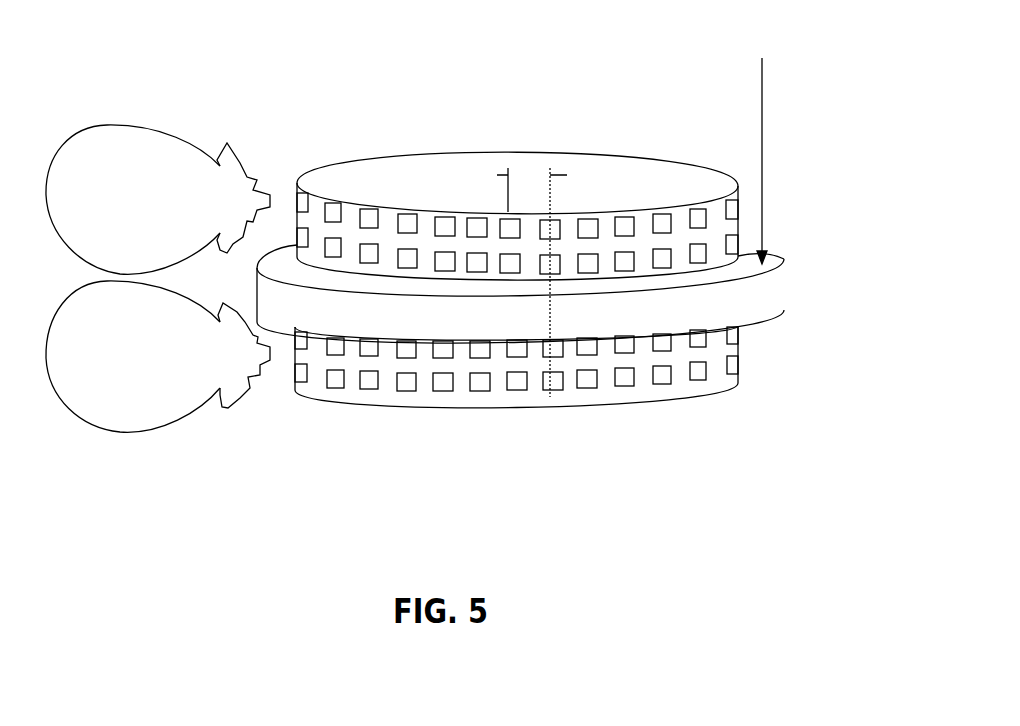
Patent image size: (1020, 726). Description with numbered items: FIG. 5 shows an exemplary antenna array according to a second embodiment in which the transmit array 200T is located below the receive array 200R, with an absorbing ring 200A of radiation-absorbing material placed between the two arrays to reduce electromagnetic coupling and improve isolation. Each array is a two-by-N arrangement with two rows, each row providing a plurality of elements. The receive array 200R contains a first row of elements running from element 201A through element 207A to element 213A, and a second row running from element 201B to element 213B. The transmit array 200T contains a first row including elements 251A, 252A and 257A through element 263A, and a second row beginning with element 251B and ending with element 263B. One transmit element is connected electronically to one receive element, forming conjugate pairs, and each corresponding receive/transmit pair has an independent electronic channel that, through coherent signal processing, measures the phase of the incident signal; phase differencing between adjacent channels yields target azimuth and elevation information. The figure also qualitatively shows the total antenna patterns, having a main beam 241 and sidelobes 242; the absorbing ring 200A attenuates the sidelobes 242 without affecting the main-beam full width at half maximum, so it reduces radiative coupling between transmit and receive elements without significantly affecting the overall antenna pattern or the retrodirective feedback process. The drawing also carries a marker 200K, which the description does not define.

The main beam 241 is at (178, 171).
The sidelobes 242 is at (237, 171).
The receive element 213B is at (308, 211).
The receive element 213A is at (299, 234).
The receive array 200R is at (421, 188).
The receive element 207A is at (583, 231).
The receive element 201B is at (738, 202).
The receive element 201A is at (741, 234).
The transmit element 251B is at (732, 338).
The transmit element 251A is at (742, 363).
The transmit element 252A is at (708, 378).
The transmit element 263B is at (307, 332).
The transmit element 263A is at (305, 364).
The transmit element 257A is at (517, 394).
The transmit array 200T is at (449, 380).
The axis 200K is at (615, 249).
The absorbing ring 200A is at (761, 142).